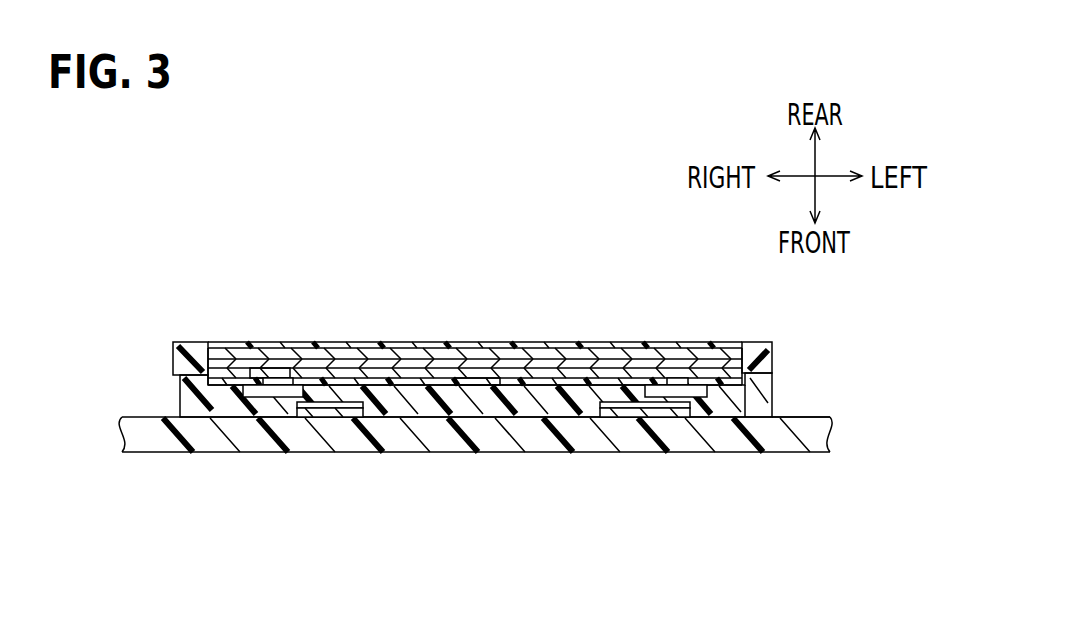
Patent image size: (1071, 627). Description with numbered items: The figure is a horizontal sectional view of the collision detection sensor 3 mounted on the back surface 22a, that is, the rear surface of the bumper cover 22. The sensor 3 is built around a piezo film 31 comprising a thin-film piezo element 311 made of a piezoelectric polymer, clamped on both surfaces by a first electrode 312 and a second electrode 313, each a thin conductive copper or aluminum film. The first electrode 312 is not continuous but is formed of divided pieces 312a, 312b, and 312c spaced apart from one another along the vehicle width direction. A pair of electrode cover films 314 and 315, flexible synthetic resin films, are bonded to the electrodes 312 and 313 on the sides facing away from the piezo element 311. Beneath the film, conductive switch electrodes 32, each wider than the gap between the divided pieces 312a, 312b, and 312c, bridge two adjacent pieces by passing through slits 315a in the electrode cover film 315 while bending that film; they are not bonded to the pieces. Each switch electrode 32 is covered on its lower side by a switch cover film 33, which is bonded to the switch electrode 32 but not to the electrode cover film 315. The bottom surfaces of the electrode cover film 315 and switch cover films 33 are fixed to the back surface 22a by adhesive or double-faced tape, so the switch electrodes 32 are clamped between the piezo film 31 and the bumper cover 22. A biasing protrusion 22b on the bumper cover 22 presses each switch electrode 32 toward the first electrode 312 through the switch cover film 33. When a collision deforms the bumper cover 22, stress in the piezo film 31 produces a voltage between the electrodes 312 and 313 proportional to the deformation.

The collision detection sensor 3 is at (609, 333).
The piezo film 31 is at (170, 343).
The switch electrode 32 is at (322, 343).
The piezo element 311 is at (382, 343).
The first electrode 312 is at (428, 388).
The divided piece 312a is at (723, 343).
The divided piece 312b is at (478, 343).
The divided piece 312c is at (212, 343).
The second electrode 313 is at (267, 343).
The electrode cover film 314 is at (542, 343).
The electrode cover film 315 is at (180, 393).
The slit 315a is at (292, 400).
The switch cover film 33 is at (332, 410).
The bumper cover 22 is at (162, 453).
The back surface 22a is at (820, 418).
The biasing protrusion 22b is at (293, 412).